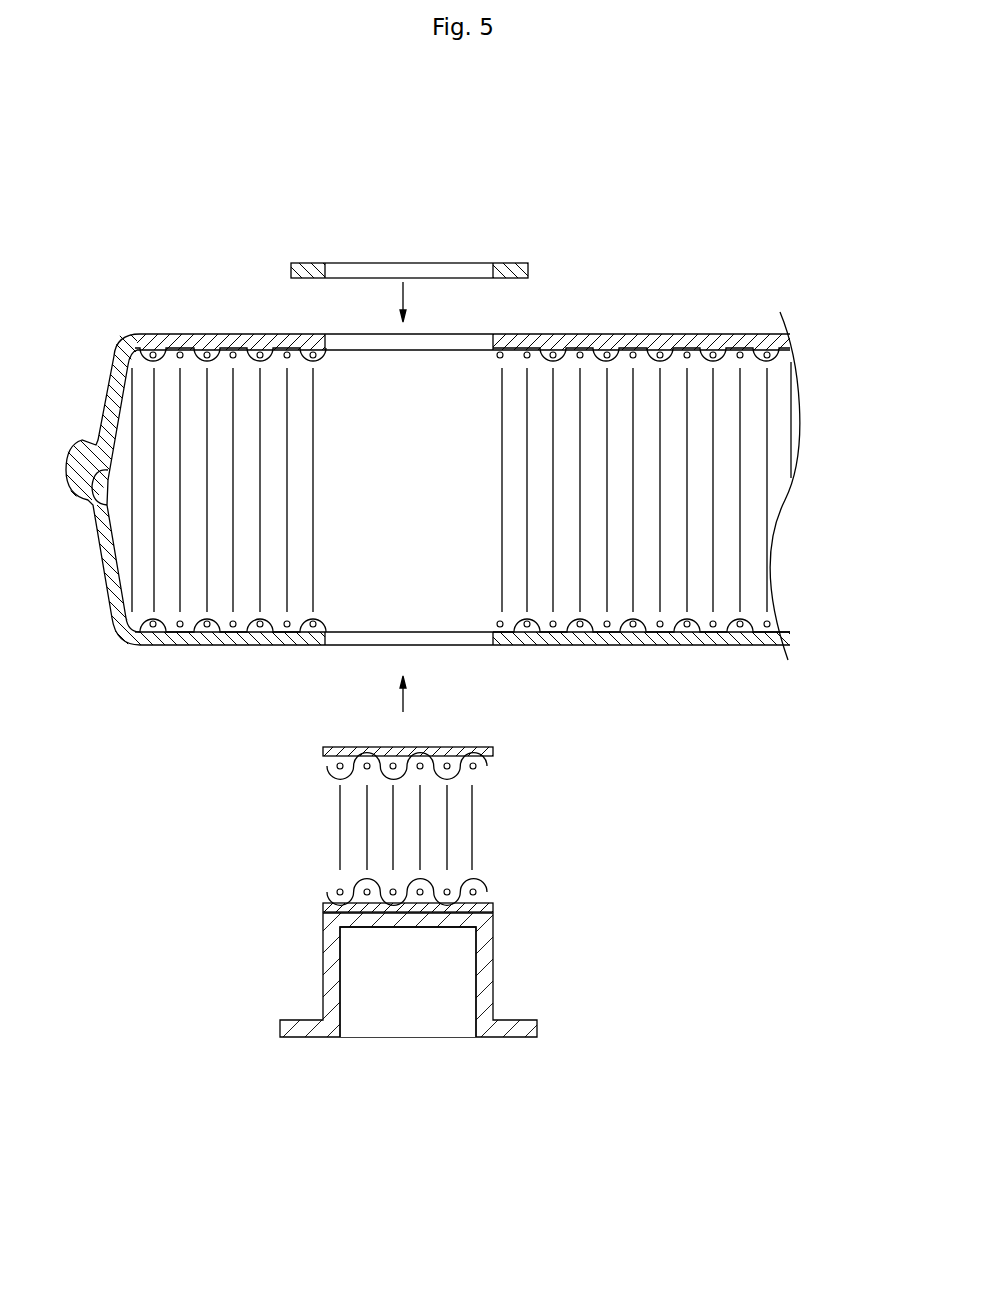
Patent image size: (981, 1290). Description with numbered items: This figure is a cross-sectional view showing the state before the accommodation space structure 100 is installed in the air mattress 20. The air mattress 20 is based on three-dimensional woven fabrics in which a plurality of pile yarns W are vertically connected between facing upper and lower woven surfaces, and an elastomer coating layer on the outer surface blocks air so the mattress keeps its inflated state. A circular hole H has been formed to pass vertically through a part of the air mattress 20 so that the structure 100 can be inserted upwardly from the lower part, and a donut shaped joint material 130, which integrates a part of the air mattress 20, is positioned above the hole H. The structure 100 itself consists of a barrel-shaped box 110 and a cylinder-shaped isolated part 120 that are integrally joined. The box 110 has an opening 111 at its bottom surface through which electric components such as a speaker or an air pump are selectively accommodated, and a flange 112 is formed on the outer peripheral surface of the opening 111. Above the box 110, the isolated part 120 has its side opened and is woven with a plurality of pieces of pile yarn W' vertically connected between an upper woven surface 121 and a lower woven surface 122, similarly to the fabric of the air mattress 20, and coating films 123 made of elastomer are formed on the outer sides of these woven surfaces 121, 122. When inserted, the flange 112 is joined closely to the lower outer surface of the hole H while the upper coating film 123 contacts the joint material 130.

The air mattress 20 is at (147, 345).
The pile yarns W is at (414, 485).
The circular hole H is at (345, 335).
The donut shaped joint material 130 is at (507, 262).
The structure 100 is at (530, 695).
The isolated part 120 is at (603, 737).
The upper woven surface 121 is at (472, 766).
The lower woven surface 122 is at (472, 890).
The coating film 123 is at (494, 752).
The pile yarn W' is at (456, 827).
The box 110 is at (488, 964).
The opening 111 is at (424, 1032).
The flange 112 is at (518, 1030).